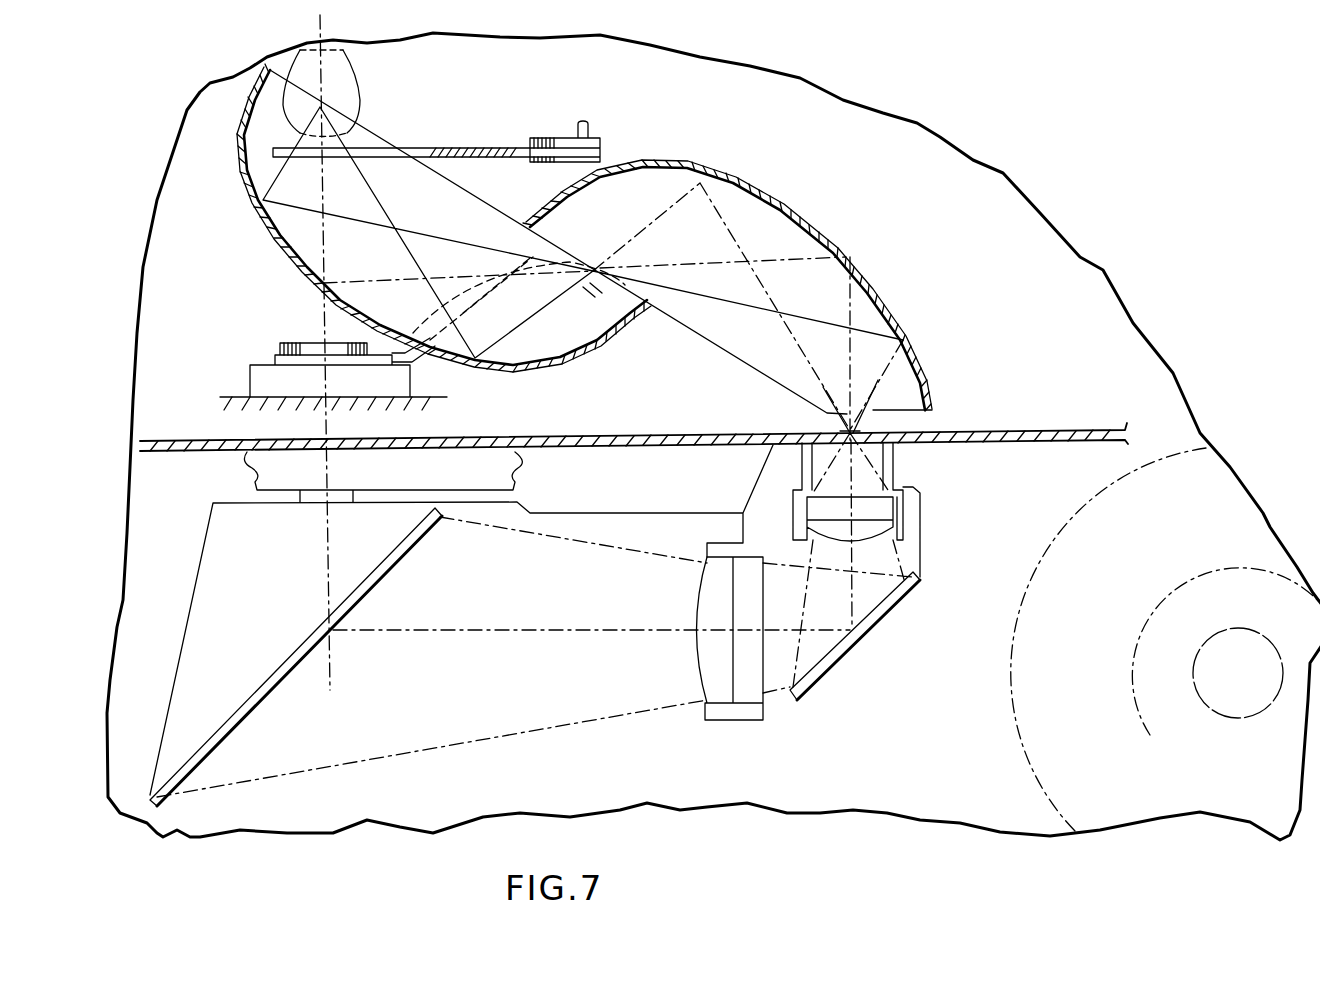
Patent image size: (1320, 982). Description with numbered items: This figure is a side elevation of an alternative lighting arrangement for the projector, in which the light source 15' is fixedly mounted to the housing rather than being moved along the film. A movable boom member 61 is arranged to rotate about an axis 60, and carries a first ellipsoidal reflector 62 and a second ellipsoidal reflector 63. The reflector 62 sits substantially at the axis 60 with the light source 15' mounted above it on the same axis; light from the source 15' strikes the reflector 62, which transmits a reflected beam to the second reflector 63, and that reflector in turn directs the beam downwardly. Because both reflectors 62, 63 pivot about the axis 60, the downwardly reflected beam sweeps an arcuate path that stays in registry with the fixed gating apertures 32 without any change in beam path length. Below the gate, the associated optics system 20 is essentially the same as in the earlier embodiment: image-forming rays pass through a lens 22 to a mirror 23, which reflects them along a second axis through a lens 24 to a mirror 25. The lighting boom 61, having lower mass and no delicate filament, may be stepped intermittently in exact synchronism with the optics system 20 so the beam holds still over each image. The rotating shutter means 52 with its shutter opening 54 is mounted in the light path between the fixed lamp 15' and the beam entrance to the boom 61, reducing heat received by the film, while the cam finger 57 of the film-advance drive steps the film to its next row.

The light source 15' is at (348, 93).
The shutter means 52 is at (477, 145).
The shutter opening 54 is at (410, 141).
The first ellipsoidal reflector 62 is at (263, 200).
The second ellipsoidal reflector 63 is at (797, 212).
The boom member 61 is at (470, 308).
The axis 60 is at (320, 322).
The apertures 32 is at (862, 428).
The lens 22 is at (888, 512).
The mirror 23 is at (833, 677).
The lens 24 is at (707, 681).
The optics system 20 is at (780, 747).
The mirror 25 is at (280, 670).
The cam finger 57 is at (1030, 640).